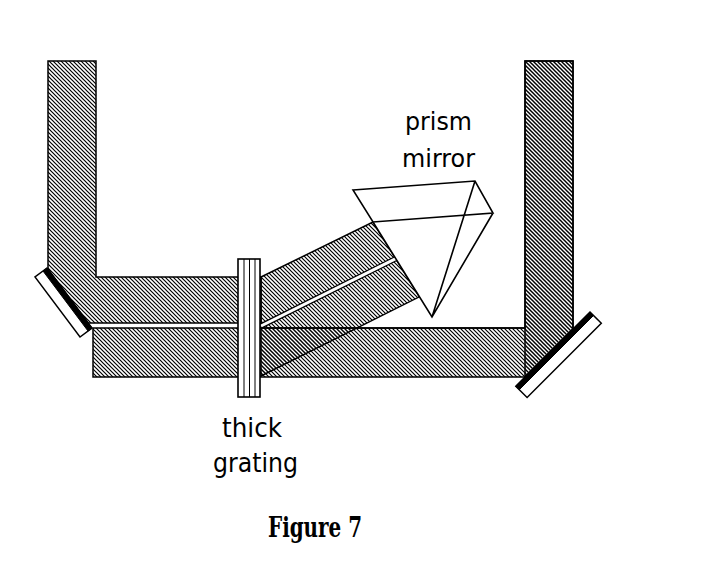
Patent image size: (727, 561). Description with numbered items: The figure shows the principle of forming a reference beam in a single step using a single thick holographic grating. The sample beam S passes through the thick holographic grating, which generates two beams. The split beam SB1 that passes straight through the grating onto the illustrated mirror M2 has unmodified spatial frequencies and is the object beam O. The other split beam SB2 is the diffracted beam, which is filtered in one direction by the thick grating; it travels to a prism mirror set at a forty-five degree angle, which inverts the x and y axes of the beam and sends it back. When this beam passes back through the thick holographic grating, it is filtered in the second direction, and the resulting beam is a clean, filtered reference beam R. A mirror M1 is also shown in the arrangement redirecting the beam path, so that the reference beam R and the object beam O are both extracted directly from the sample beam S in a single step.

The reference beam R is at (154, 168).
The object beam O is at (549, 196).
The sample beam S is at (333, 240).
The mirror M1 is at (52, 310).
The mirror M2 is at (567, 364).
The split beam SB1 is at (393, 351).
The split beam SB2 is at (340, 299).